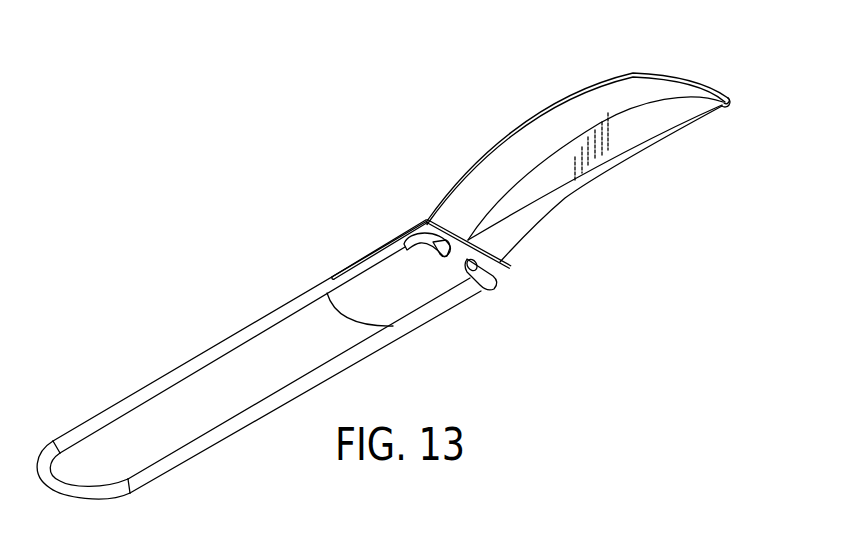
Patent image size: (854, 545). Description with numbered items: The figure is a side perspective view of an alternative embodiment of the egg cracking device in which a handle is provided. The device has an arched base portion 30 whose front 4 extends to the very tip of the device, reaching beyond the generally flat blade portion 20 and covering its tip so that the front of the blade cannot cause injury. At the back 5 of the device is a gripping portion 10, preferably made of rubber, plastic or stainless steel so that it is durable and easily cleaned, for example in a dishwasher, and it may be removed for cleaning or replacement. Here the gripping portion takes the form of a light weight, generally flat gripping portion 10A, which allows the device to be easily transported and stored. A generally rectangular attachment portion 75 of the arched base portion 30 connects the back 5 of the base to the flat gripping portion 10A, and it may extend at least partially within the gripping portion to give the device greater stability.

The front 4 is at (725, 93).
The back 5 is at (427, 219).
The gripping portion 10 is at (243, 367).
The generally flat gripping portion 10A is at (132, 438).
The generally flat blade portion 20 is at (637, 130).
The arched base portion 30 is at (550, 120).
The generally rectangular attachment portion 75 is at (362, 253).